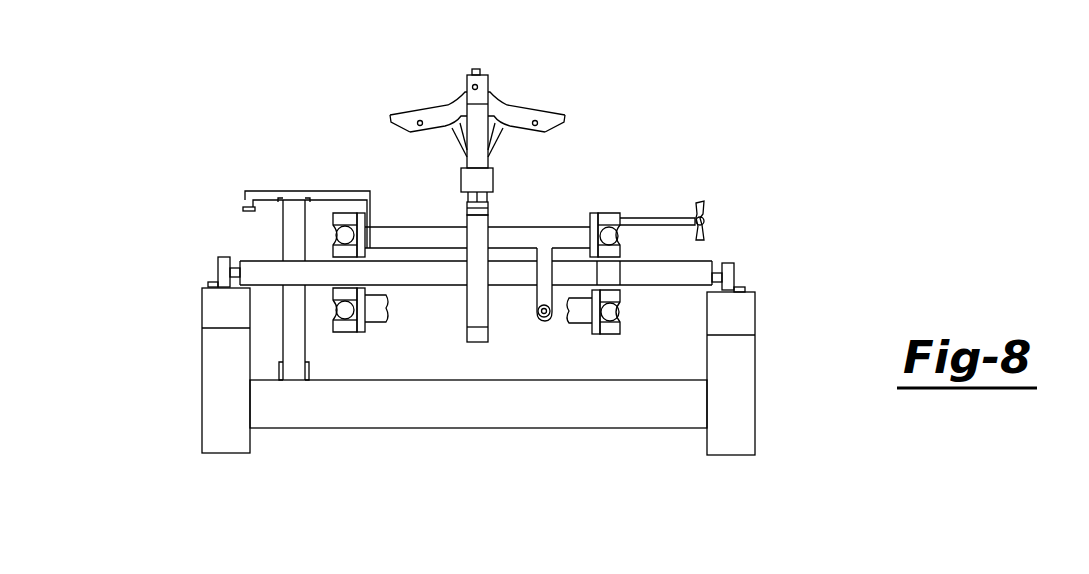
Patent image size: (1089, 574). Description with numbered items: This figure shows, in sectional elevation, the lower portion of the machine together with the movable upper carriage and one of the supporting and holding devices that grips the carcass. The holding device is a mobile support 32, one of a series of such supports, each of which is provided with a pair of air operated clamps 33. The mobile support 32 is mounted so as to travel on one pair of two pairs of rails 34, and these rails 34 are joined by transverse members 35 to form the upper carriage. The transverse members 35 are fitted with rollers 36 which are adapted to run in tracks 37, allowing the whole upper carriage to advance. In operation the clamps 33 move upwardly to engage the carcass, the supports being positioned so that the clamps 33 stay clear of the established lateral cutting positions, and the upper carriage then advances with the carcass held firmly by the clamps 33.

The mobile support 32 is at (478, 70).
The air operated clamp 33 is at (418, 110).
The rail 34 is at (612, 238).
The transverse member 35 is at (692, 276).
The roller 36 is at (217, 268).
The track 37 is at (216, 290).